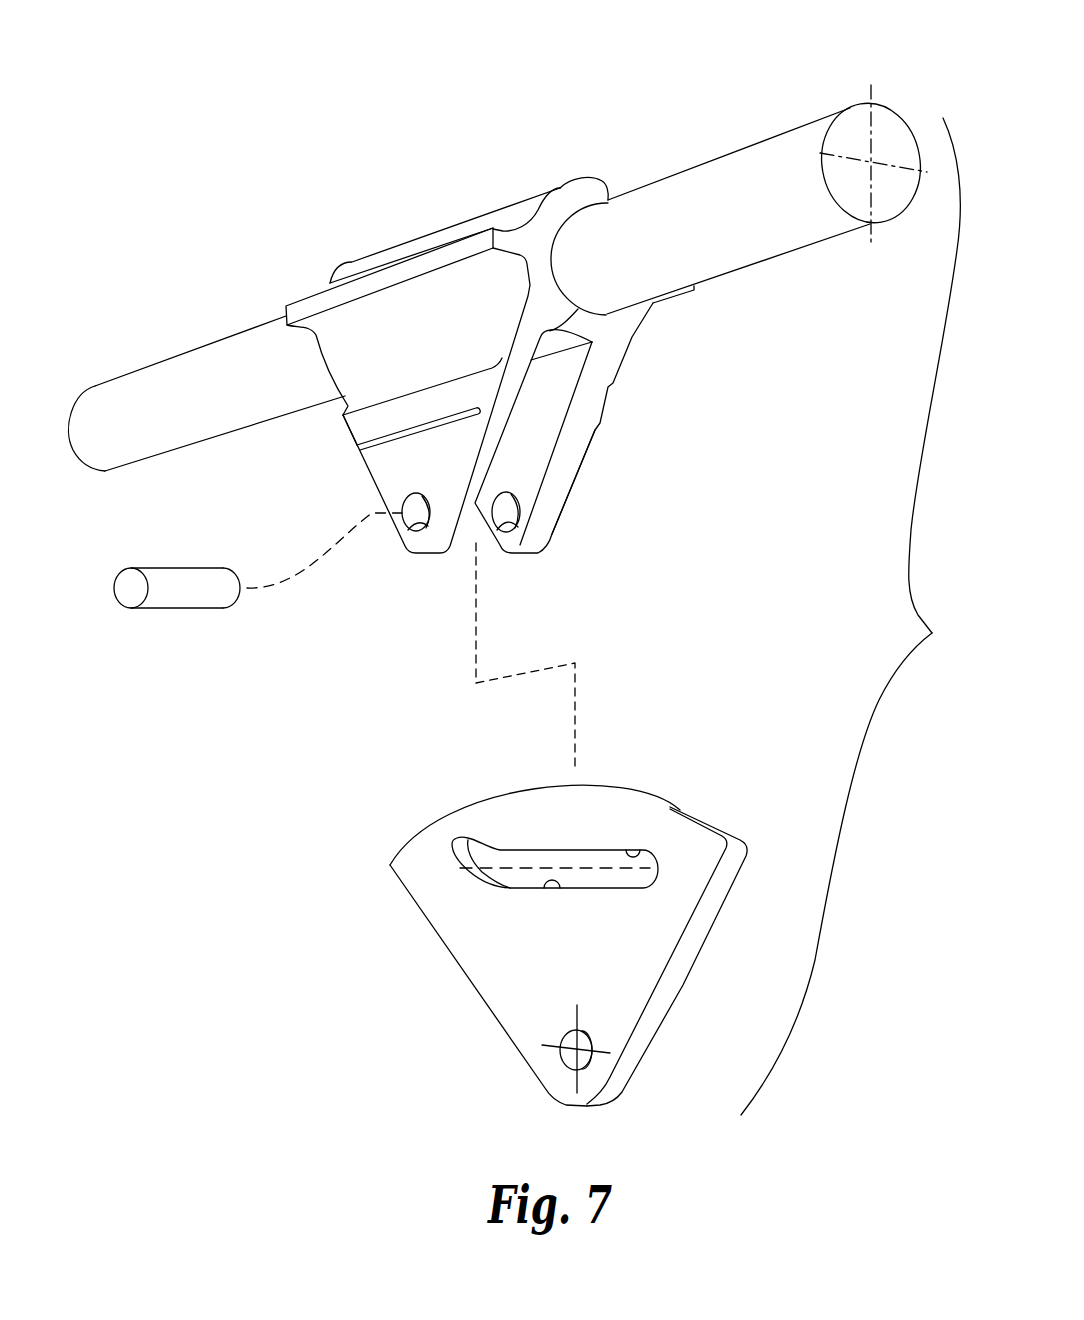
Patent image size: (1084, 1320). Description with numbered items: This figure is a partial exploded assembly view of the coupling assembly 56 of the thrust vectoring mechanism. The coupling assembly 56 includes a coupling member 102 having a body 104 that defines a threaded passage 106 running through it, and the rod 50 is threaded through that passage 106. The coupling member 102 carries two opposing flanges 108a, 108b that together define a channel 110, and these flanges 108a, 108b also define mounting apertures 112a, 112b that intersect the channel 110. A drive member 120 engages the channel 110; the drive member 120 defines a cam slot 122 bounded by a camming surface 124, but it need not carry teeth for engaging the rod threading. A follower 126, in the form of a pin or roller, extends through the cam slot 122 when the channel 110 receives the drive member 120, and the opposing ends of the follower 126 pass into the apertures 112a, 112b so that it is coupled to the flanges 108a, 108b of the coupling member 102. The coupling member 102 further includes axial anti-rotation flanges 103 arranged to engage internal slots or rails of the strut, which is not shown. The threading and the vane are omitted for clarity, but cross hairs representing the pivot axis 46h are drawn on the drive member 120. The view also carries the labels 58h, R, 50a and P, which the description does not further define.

The rod 50 is at (752, 272).
The handle end of rod 58h is at (770, 136).
The rotation axis R is at (873, 163).
The handlebar grip portion 50a is at (184, 354).
The coupling member 102 is at (454, 210).
The anti-rotation flanges 103 is at (314, 300).
The body 104 is at (336, 427).
The threaded passage 106 is at (597, 198).
The channel 110 is at (551, 407).
The flange 108a is at (366, 465).
The flange 108b is at (584, 448).
The mounting aperture 112a is at (416, 532).
The mounting aperture 112b is at (510, 530).
The follower 126 is at (218, 568).
The coupling assembly 56 is at (371, 597).
The drive member 120 is at (713, 931).
The cam slot 122 is at (627, 850).
The camming surface 124 is at (550, 881).
The pivot path P is at (509, 872).
The pivot axis 46h is at (580, 1032).